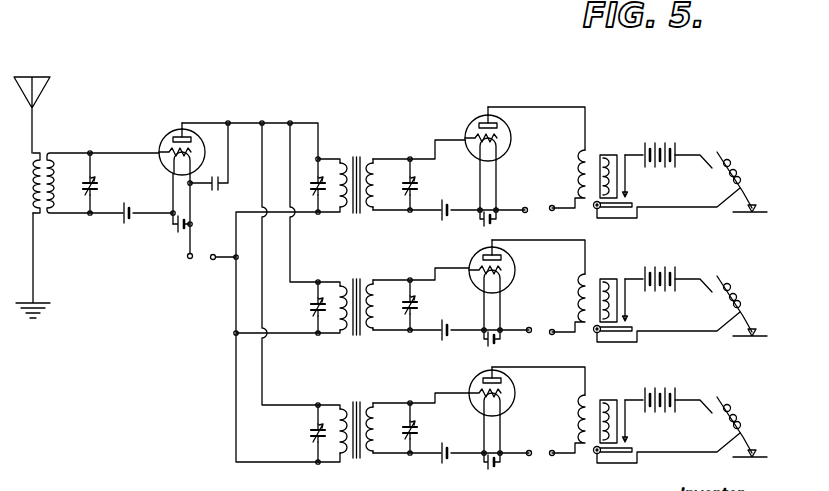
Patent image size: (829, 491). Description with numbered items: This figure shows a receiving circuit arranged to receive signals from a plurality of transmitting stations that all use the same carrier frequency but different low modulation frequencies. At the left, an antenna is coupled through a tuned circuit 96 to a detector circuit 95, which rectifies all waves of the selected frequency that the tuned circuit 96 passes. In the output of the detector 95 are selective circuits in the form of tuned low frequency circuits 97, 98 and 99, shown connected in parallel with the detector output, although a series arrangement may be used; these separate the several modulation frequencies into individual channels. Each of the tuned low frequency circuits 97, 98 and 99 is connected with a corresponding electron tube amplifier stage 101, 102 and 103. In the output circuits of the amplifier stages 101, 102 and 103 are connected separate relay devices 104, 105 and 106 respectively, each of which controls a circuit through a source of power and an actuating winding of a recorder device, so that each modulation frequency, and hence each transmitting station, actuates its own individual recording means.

The detector circuit 95 is at (153, 136).
The tuned circuit 96 is at (70, 208).
The tuned low frequency circuit 97 is at (358, 151).
The tuned low frequency circuit 98 is at (363, 276).
The tuned low frequency circuit 99 is at (363, 398).
The electron tube amplifier stage 101 is at (458, 126).
The electron tube amplifier stage 102 is at (462, 261).
The electron tube amplifier stage 103 is at (465, 386).
The relay device 104 is at (598, 147).
The relay device 105 is at (597, 270).
The relay device 106 is at (598, 396).